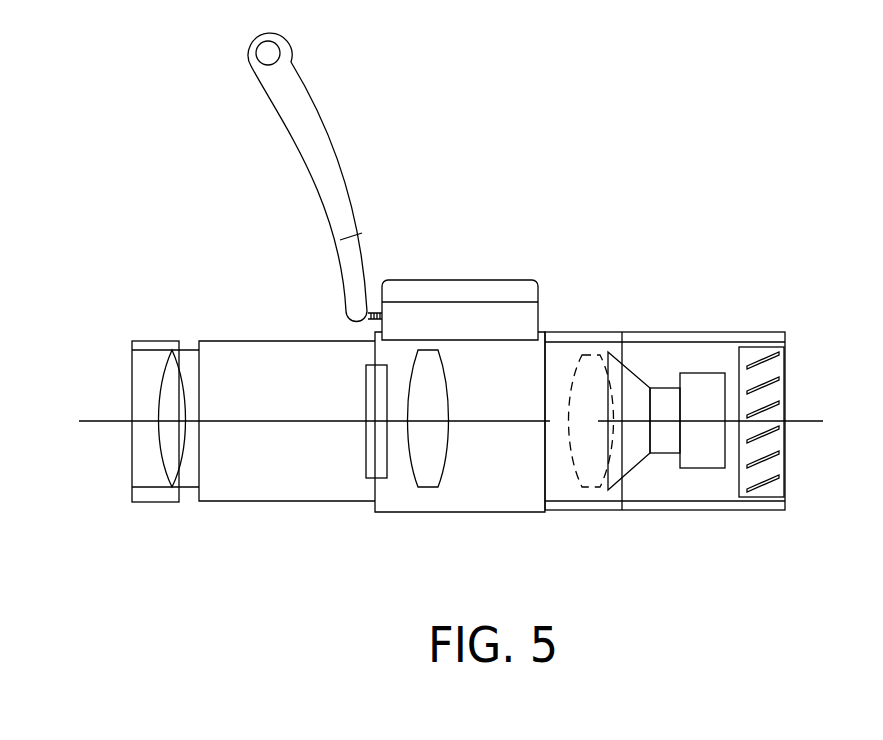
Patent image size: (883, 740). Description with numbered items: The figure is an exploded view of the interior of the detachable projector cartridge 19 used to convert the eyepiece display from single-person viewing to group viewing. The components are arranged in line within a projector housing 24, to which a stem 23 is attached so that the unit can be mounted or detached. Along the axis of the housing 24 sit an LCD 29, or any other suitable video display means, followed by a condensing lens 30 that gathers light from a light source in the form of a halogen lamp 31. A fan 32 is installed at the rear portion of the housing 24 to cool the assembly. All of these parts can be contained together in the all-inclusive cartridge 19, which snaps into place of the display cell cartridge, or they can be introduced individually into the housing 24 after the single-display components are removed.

The projector cartridge 19 is at (598, 302).
The stem 23 is at (345, 162).
The projector housing 24 is at (728, 332).
The LCD 29 is at (365, 383).
The condensing lens 30 is at (448, 398).
The halogen lamp 31 is at (633, 387).
The fan 32 is at (780, 397).